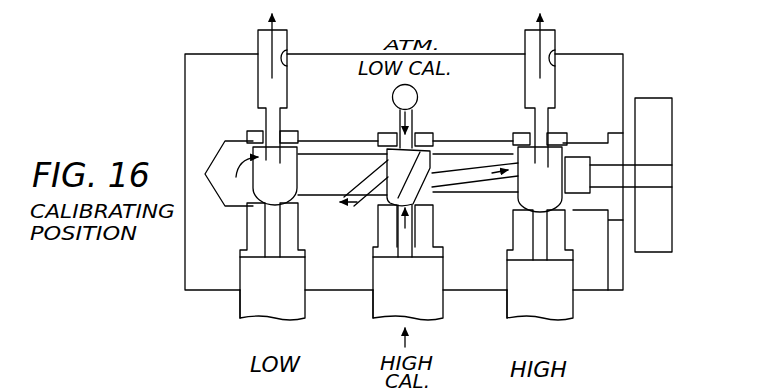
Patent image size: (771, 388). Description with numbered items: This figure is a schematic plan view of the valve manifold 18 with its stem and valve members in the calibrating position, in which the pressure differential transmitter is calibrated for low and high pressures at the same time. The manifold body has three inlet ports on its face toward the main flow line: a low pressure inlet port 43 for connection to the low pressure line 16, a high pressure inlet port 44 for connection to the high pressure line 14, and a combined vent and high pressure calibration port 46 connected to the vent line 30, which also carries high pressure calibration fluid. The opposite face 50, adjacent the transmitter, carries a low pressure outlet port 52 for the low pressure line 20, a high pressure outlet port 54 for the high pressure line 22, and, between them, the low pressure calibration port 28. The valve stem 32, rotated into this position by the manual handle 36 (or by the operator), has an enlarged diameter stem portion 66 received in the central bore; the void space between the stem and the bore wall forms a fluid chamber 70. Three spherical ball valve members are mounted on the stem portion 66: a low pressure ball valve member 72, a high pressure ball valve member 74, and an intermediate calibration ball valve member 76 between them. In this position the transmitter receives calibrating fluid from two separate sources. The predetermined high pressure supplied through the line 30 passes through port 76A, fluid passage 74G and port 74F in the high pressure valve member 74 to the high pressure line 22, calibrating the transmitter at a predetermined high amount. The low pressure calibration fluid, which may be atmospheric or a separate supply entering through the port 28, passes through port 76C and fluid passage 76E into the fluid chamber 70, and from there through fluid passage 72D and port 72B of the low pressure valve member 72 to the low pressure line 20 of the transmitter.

The high pressure line 14 is at (507, 307).
The low pressure line 16 is at (240, 309).
The valve manifold 18 is at (185, 68).
The low pressure line 20 is at (258, 45).
The high pressure line 22 is at (525, 45).
The low pressure calibration port 28 is at (418, 92).
The vent line 30 is at (373, 308).
The valve stem 32 is at (665, 178).
The manual handle 36 is at (665, 125).
The low pressure inlet port 43 is at (242, 275).
The high pressure inlet port 44 is at (509, 277).
The combined vent and high pressure calibration port 46 is at (378, 278).
The opposite face 50 is at (352, 54).
The low pressure outlet port 52 is at (287, 50).
The high pressure outlet port 54 is at (555, 50).
The enlarged diameter stem portion 66 is at (317, 196).
The fluid chamber 70 is at (318, 140).
The low pressure ball valve member 72 is at (300, 162).
The port 72B is at (262, 147).
The fluid passage 72D is at (275, 176).
The high pressure ball valve member 74 is at (516, 157).
The port 74F is at (546, 152).
The fluid passage 74G is at (452, 190).
The calibration ball valve member 76 is at (434, 157).
The port 76A is at (397, 222).
The port 76C is at (396, 148).
The fluid passage 76E is at (380, 163).